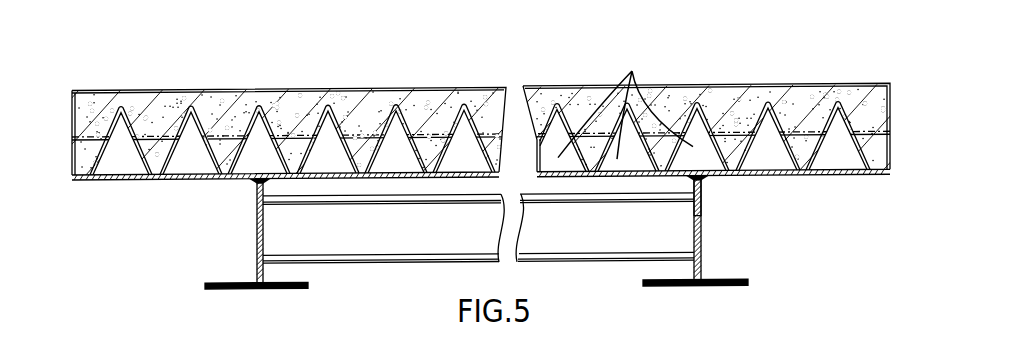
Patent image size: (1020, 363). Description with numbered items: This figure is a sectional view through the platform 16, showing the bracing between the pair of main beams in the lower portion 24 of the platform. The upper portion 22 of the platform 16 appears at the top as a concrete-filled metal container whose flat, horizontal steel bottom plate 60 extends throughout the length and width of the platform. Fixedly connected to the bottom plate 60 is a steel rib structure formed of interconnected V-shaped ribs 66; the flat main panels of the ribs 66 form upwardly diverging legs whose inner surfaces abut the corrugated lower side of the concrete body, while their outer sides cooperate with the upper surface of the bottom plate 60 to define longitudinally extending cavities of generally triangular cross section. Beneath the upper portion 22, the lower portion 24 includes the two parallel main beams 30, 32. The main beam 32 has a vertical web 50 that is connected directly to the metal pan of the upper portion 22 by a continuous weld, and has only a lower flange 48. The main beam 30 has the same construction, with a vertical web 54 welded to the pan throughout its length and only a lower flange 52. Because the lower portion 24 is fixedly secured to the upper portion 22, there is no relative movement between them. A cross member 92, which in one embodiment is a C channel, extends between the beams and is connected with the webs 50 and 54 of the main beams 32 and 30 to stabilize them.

The platform 16 is at (480, 128).
The upper portion 22 is at (905, 120).
The lower portion 24 is at (727, 250).
The main beam 30 is at (247, 256).
The main beam 32 is at (720, 259).
The lower flange 48 is at (672, 288).
The vertical web 50 is at (703, 212).
The lower flange 52 is at (248, 290).
The vertical web 54 is at (257, 210).
The bottom plate 60 is at (853, 173).
The V-shaped ribs 66 is at (668, 67).
The cross member 92 is at (364, 233).